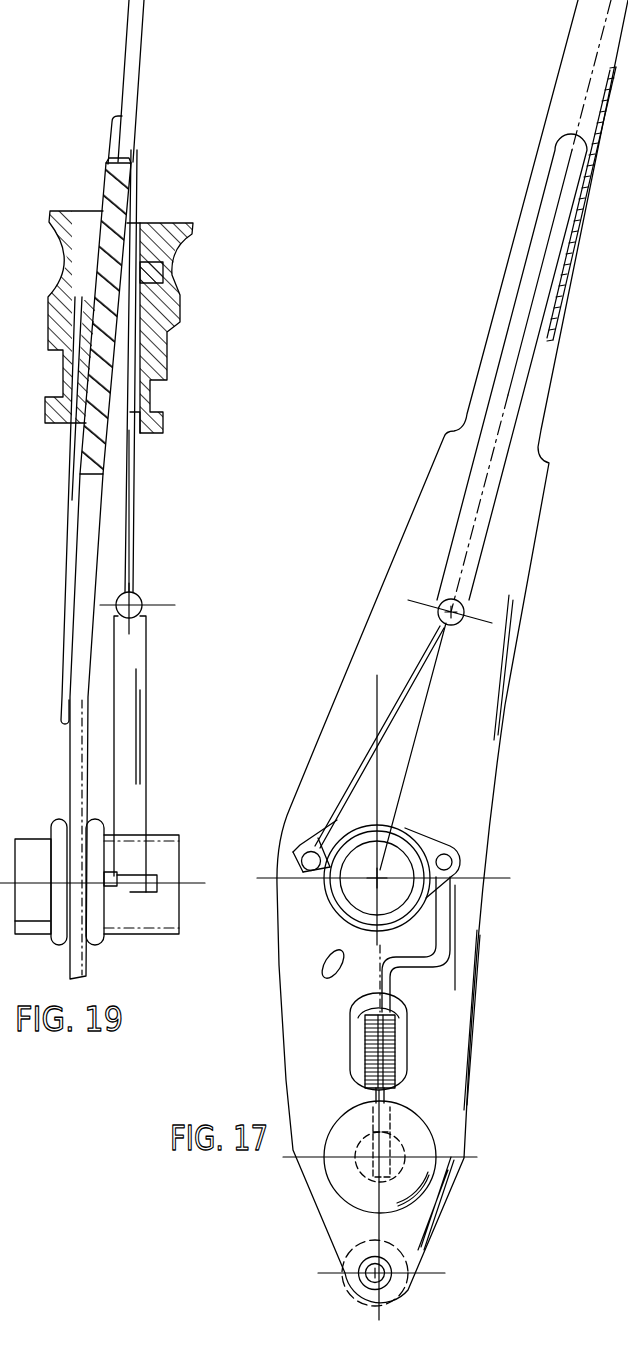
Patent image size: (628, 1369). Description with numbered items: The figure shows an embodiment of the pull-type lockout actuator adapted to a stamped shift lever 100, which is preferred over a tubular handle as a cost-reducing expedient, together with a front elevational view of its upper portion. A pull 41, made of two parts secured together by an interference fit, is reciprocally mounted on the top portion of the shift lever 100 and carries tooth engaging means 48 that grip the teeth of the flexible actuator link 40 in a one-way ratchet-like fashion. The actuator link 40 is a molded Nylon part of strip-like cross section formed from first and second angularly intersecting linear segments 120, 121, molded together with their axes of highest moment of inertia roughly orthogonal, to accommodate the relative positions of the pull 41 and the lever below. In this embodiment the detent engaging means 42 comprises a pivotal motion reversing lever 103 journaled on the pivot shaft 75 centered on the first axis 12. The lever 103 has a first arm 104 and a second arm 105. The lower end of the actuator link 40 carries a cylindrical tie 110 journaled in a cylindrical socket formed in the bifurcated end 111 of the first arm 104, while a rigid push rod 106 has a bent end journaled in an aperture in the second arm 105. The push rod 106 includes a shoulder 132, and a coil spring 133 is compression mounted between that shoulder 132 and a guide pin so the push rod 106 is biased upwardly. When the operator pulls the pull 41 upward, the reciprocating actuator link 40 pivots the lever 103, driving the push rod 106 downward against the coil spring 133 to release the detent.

In FIG. 19, the stamped shift lever 100 is at (128, 115).
In FIG. 17, the stamped shift lever 100 is at (587, 95).
In FIG. 19, the tooth engaging means 48 is at (165, 268).
In FIG. 19, the pull 41 is at (170, 312).
In FIG. 19, the first linear segment 120 is at (133, 514).
In FIG. 17, the first linear segment 120 is at (471, 540).
In FIG. 19, the flexible actuator link 40 is at (133, 550).
In FIG. 17, the flexible actuator link 40 is at (399, 687).
In FIG. 19, the second linear segment 121 is at (133, 671).
In FIG. 17, the second linear segment 121 is at (414, 660).
In FIG. 19, the cylindrical tie 110 is at (133, 890).
In FIG. 17, the cylindrical tie 110 is at (310, 870).
In FIG. 17, the bifurcated end 111 is at (292, 850).
In FIG. 17, the first lever arm 104 is at (340, 843).
In FIG. 17, the pivotal motion reversing lever 103 is at (397, 830).
In FIG. 17, the pivot shaft 75 is at (407, 848).
In FIG. 17, the first axis 12 is at (370, 883).
In FIG. 17, the second lever arm 105 is at (450, 856).
In FIG. 17, the rigid push rod 106 is at (437, 965).
In FIG. 17, the shoulder 132 is at (393, 1017).
In FIG. 17, the coil spring 133 is at (395, 1067).
In FIG. 17, the detent engaging means 42 is at (523, 797).